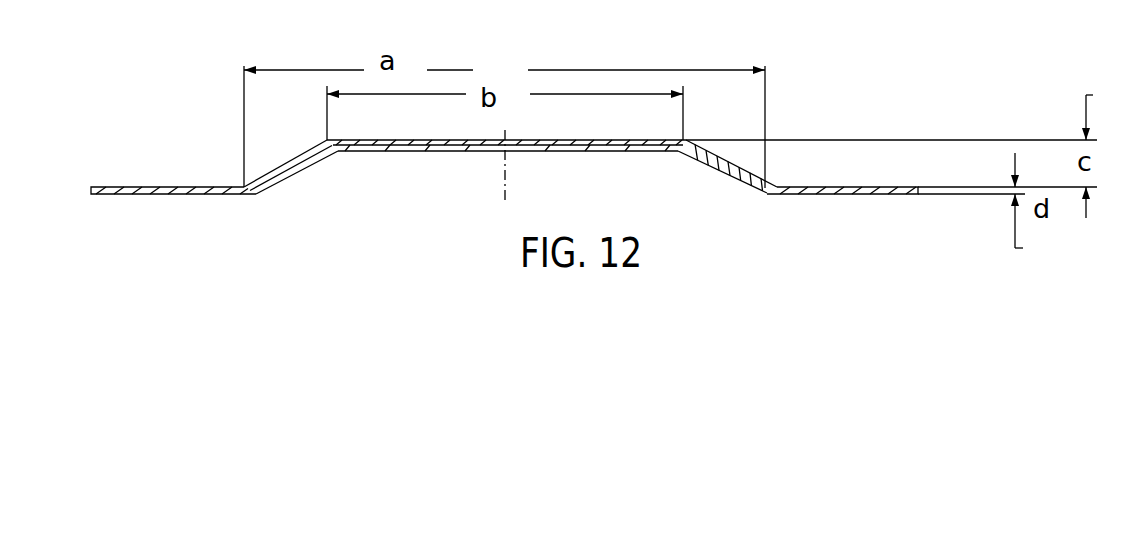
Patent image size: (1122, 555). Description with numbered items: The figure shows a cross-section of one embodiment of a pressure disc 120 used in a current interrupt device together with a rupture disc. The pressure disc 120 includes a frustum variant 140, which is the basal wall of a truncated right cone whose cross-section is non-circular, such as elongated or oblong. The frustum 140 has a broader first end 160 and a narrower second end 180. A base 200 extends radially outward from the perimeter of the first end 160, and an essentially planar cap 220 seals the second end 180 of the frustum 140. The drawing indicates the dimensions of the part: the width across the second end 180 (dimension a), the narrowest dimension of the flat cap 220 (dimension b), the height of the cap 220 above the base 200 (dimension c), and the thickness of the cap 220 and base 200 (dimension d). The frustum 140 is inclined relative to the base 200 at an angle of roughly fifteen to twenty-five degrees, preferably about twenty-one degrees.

The pressure disc 120 is at (96, 186).
The frustum variant 140 is at (733, 163).
The first end 160 is at (791, 195).
The second end 180 is at (688, 140).
The base 200 is at (190, 194).
The essentially planar cap 220 is at (404, 140).